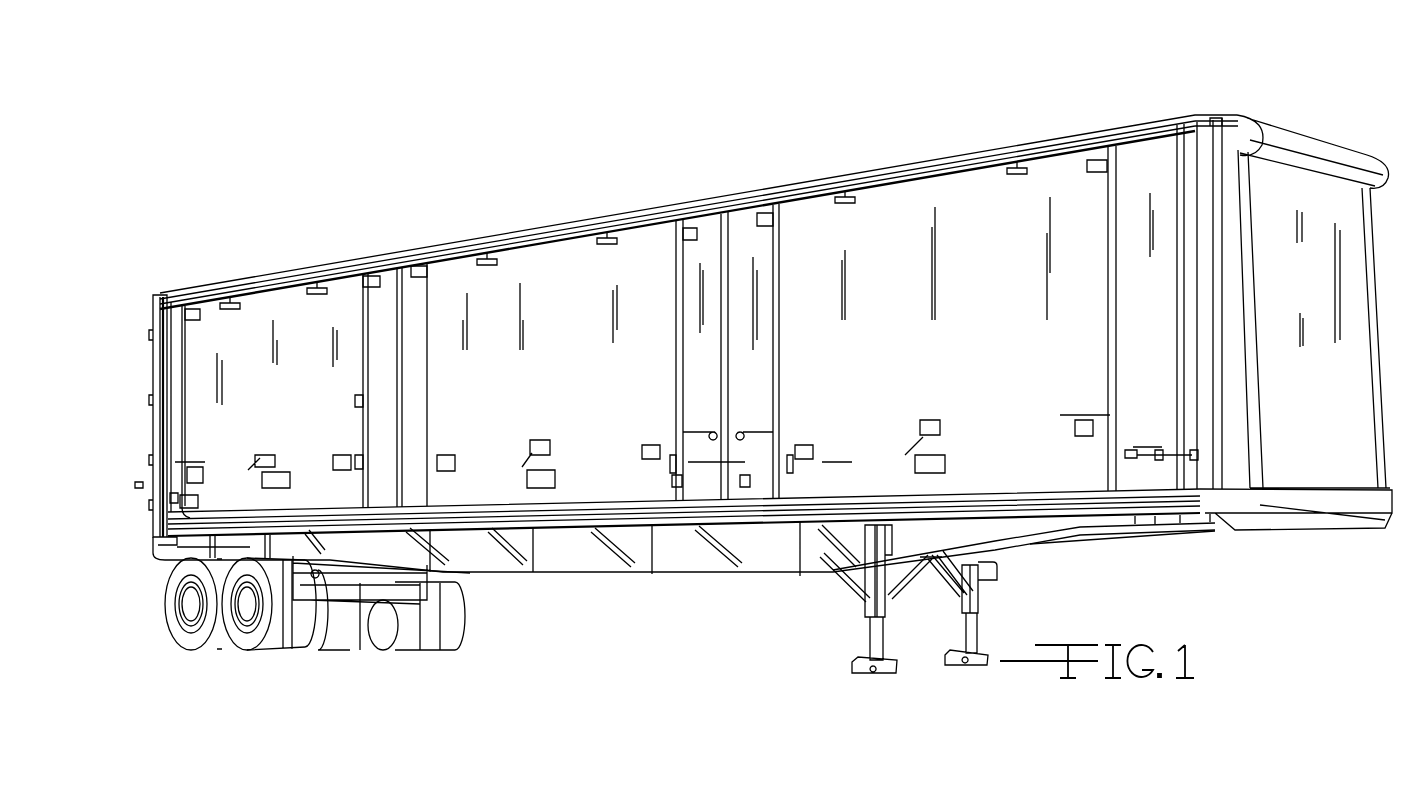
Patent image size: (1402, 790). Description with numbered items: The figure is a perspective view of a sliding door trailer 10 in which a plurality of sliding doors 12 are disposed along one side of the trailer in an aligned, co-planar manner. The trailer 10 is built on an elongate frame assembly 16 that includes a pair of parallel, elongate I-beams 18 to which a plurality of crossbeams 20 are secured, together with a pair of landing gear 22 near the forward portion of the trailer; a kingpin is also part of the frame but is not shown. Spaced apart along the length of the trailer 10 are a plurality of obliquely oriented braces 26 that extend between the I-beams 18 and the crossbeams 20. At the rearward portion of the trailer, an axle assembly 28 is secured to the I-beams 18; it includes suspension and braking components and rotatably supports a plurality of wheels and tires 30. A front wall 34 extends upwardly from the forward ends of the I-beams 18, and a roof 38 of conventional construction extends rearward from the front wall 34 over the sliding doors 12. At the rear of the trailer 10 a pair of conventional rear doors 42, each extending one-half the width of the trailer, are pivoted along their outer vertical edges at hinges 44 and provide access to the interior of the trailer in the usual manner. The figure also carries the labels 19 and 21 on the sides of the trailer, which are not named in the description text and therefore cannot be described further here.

The sliding door trailer 10 is at (958, 108).
The sliding doors 12 is at (309, 385).
The frame assembly 16 is at (1104, 550).
The I-beams 18 is at (708, 578).
The rear latches 19 is at (138, 485).
The crossbeams 20 is at (703, 455).
The front latches 21 is at (1138, 440).
The landing gear 22 is at (962, 628).
The obliquely oriented braces 26 is at (503, 573).
The axle assembly 28 is at (325, 648).
The wheels and tires 30 is at (248, 640).
The front wall 34 is at (1306, 287).
The roof 38 is at (645, 212).
The rear doors 42 is at (198, 345).
The hinges 44 is at (157, 426).